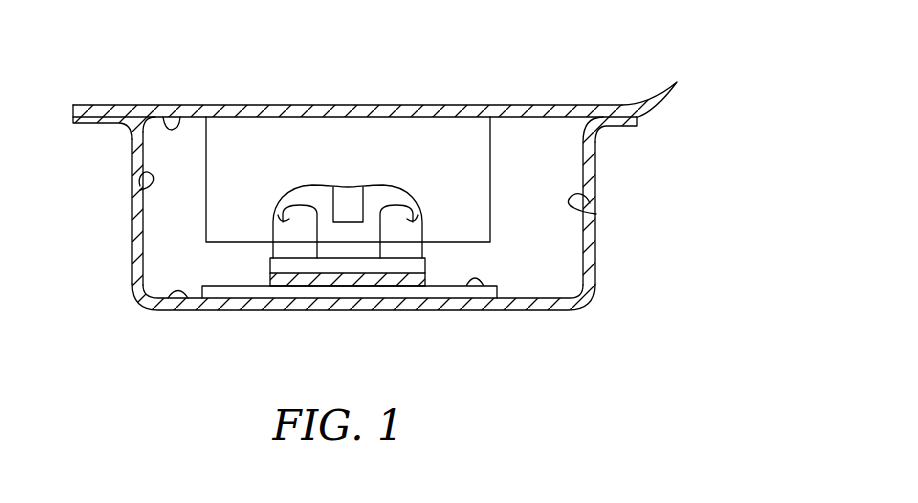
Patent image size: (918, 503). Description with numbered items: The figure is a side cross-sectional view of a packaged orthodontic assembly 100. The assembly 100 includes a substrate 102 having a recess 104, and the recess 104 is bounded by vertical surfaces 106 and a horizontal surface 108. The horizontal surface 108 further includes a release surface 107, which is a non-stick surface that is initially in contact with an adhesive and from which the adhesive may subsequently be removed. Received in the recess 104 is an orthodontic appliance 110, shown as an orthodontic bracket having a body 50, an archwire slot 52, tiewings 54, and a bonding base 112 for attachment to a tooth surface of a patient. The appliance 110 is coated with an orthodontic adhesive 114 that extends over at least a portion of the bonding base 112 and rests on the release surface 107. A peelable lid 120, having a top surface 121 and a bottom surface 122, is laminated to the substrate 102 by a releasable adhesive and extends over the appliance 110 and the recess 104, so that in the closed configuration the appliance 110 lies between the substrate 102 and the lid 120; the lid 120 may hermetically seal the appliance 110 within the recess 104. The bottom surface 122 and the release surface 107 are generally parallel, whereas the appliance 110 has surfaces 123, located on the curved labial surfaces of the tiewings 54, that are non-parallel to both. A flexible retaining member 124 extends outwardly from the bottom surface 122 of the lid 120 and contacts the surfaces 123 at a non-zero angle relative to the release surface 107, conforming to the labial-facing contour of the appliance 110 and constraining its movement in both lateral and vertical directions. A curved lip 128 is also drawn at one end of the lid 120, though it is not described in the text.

The packaged orthodontic assembly 100 is at (623, 32).
The substrate 102 is at (598, 167).
The recess 104 is at (574, 252).
The vertical surfaces 106 is at (140, 190).
The release surface 107 is at (484, 290).
The horizontal surface 108 is at (165, 298).
The orthodontic appliance 110 is at (302, 182).
The bonding base 112 is at (310, 265).
The orthodontic adhesive 114 is at (372, 280).
The peelable lid 120 is at (531, 103).
The top surface 121 is at (118, 103).
The bottom surface 122 is at (167, 117).
The surfaces 123 is at (276, 212).
The retaining member 124 is at (218, 127).
The lip 128 is at (672, 98).
The body 50 is at (345, 248).
The archwire slot 52 is at (342, 188).
The tiewings 54 is at (284, 259).